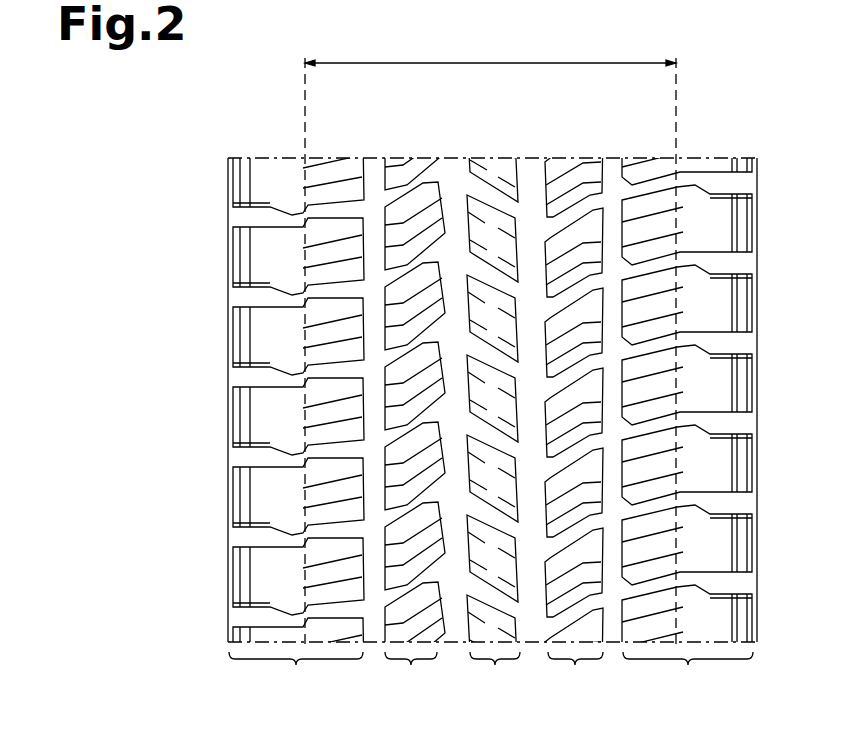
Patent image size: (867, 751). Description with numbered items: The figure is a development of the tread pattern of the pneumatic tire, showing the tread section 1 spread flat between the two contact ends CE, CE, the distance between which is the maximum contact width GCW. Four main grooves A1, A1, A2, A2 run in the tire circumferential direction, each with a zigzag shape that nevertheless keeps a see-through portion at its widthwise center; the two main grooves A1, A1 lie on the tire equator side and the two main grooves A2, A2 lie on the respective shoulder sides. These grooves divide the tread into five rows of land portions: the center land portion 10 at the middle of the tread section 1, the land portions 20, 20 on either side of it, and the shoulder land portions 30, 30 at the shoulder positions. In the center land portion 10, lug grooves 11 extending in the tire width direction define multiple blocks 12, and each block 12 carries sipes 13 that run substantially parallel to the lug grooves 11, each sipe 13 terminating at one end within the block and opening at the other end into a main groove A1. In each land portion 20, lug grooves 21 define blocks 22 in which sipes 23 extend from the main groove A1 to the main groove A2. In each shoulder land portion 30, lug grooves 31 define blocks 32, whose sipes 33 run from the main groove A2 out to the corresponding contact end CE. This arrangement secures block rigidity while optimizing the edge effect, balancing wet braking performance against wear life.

The tread section 1 is at (724, 151).
The center land portion 10 is at (484, 384).
The lug grooves 11 is at (477, 170).
The blocks 12 is at (485, 175).
The sipes 13 is at (505, 172).
The land portions 20 is at (496, 387).
The lug grooves 21 is at (411, 170).
The blocks 22 is at (553, 180).
The sipes 23 is at (578, 178).
The shoulder land portions 30 is at (491, 386).
The lug grooves 31 is at (327, 213).
The blocks 32 is at (710, 166).
The sipes 33 is at (645, 210).
The main grooves A1 is at (453, 165).
The main grooves A2 is at (373, 168).
The contact end CE is at (305, 108).
The maximum contact width GCW is at (490, 50).